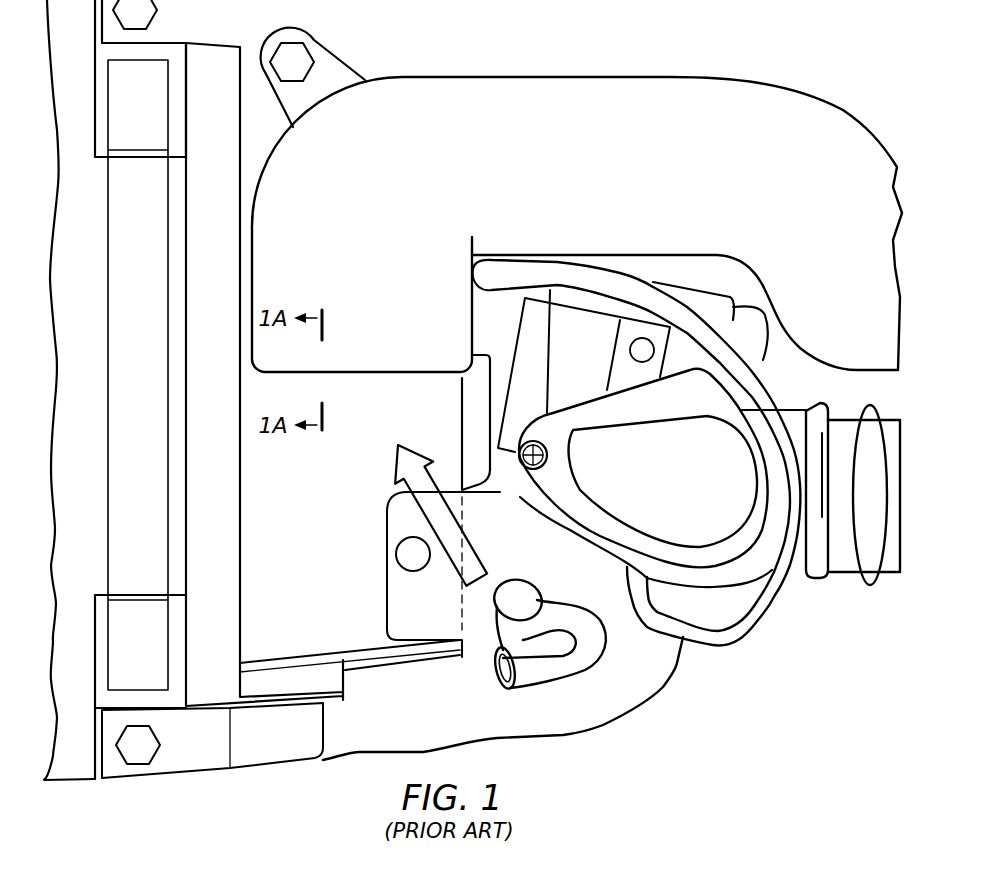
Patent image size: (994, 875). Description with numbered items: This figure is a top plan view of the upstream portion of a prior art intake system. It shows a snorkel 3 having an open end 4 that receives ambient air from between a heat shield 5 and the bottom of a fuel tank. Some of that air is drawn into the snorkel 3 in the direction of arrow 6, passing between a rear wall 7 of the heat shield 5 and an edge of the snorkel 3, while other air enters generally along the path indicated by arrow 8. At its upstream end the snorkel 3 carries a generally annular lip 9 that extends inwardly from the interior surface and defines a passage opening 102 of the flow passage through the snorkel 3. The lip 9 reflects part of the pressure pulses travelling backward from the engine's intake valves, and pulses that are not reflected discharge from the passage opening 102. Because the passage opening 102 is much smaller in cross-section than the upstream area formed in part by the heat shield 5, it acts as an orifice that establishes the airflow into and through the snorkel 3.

The snorkel 3 is at (571, 70).
The open end 4 is at (287, 376).
The heat shield 5 is at (258, 540).
The arrow 6 is at (473, 306).
The rear wall 7 is at (510, 383).
The arrow 8 is at (405, 440).
The lip 9 is at (420, 380).
The passage opening 102 is at (376, 395).